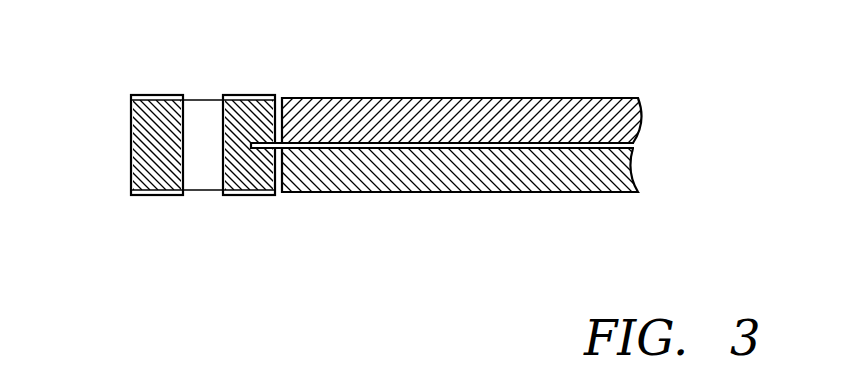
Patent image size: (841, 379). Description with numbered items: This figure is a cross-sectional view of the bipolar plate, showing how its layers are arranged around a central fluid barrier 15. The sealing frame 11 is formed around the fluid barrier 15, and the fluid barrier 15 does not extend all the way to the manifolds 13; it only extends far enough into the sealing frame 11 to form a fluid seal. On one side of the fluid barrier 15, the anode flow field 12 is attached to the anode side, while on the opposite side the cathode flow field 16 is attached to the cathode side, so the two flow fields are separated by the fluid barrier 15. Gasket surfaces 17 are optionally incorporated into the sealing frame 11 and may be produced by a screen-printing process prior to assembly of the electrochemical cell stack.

The sealing frame 11 is at (131, 146).
The anode flow field 12 is at (467, 98).
The manifolds 13 is at (205, 100).
The fluid barrier 15 is at (634, 147).
The cathode flow field 16 is at (467, 192).
The gasket surfaces 17 is at (152, 95).